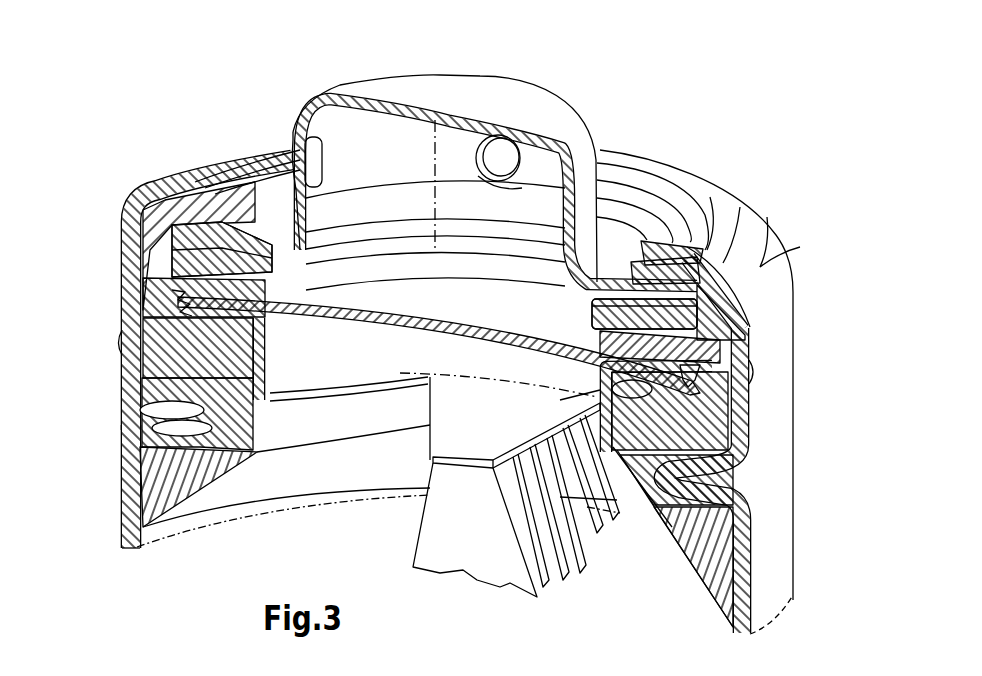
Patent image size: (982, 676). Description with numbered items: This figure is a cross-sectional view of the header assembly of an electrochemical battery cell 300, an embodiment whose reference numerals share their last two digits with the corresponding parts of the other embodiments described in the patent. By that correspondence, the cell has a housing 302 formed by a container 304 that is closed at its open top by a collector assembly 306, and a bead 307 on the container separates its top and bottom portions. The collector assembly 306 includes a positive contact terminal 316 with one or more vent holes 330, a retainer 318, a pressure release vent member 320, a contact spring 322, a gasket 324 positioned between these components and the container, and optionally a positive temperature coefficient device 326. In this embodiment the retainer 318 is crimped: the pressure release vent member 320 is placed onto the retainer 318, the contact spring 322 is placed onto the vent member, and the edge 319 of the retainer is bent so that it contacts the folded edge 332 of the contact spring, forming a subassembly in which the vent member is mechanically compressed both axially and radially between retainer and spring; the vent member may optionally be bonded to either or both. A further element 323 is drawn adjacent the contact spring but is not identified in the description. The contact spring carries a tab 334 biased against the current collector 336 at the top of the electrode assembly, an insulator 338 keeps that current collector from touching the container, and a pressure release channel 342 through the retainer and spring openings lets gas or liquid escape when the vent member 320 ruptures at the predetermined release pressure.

The electrochemical battery cell 300 is at (144, 146).
The shell 302 is at (112, 289).
The skirt 304 is at (123, 481).
The cap body 306 is at (610, 116).
The fold 307 is at (135, 396).
The dome 316 is at (560, 95).
The retainer 318 is at (336, 272).
The edge of the retainer 319 is at (124, 343).
The pressure release vent member 320 is at (468, 318).
The contact spring 322 is at (353, 360).
The layer 323 is at (262, 430).
The flange 324 is at (706, 247).
The flange 326 is at (748, 287).
The holes 330 is at (298, 158).
The folded edge 332 is at (182, 300).
The cut block 334 is at (435, 440).
The cut shards 336 is at (600, 547).
The liner 338 is at (160, 490).
The axis 342 is at (406, 260).